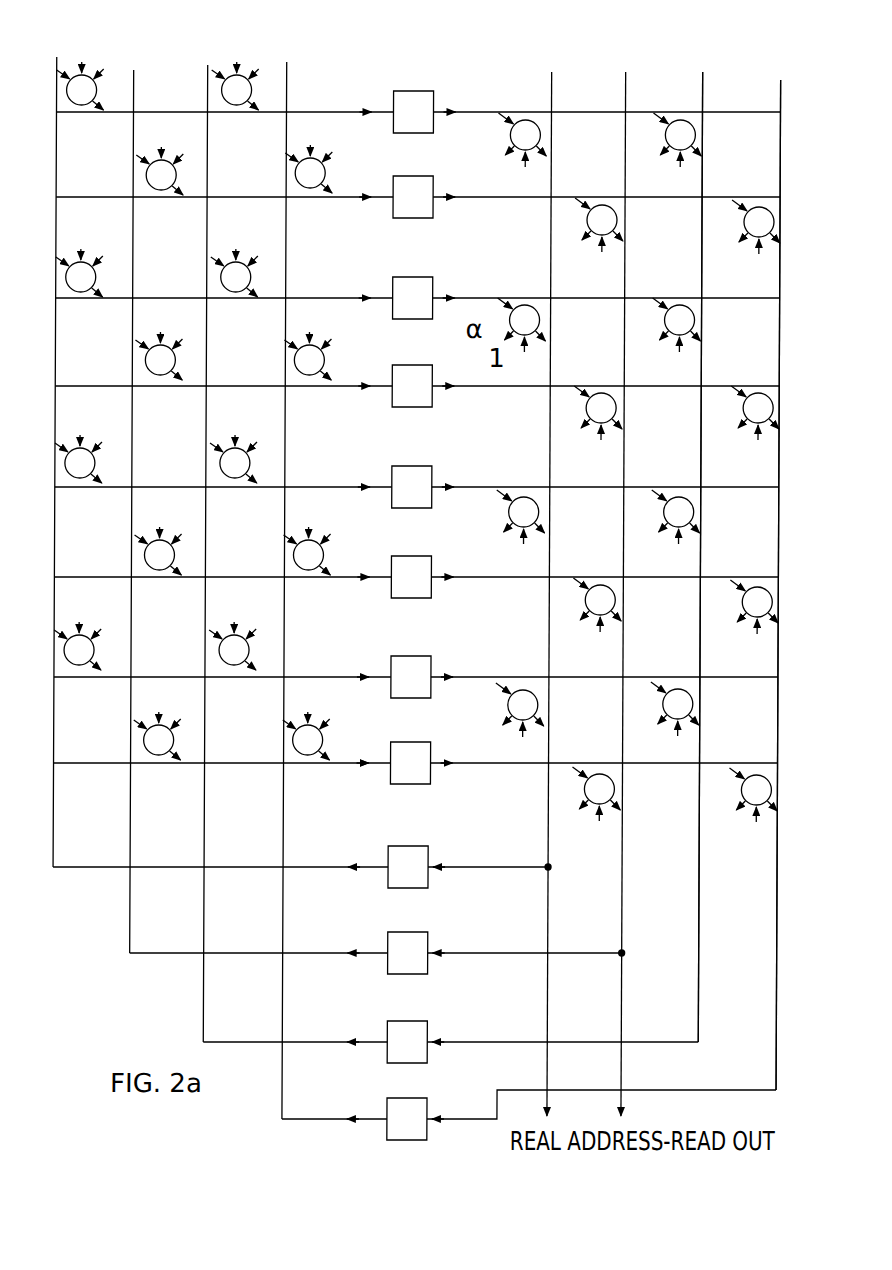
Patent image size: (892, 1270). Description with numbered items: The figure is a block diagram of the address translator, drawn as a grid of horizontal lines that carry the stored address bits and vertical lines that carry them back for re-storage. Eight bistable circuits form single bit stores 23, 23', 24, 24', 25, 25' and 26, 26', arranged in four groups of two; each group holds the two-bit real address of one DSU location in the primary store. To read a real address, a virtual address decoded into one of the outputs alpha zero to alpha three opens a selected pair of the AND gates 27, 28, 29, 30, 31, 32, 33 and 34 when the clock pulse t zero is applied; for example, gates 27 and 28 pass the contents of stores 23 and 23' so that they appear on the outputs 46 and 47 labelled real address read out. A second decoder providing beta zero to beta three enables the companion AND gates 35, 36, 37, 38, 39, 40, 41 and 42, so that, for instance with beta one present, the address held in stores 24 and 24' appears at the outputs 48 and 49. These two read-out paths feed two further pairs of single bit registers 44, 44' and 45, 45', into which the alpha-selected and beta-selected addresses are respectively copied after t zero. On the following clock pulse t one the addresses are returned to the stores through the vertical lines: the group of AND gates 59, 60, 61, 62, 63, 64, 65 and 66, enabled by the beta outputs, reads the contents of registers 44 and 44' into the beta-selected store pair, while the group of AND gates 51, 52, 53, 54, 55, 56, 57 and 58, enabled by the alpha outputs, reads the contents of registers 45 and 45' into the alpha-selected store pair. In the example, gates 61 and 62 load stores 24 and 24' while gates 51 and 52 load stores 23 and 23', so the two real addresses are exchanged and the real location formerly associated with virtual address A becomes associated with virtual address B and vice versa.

The single bit store 23 is at (419, 128).
The single bit store 23' is at (433, 217).
The single bit store 24 is at (432, 310).
The single bit store 24' is at (435, 398).
The single bit store 25 is at (434, 477).
The single bit store 25' is at (433, 591).
The single bit store 26 is at (436, 668).
The single bit store 26' is at (435, 778).
The AND gate 27 is at (541, 135).
The AND gate 28 is at (618, 220).
The AND gate 29 is at (541, 320).
The AND gate 30 is at (618, 408).
The AND gate 31 is at (541, 512).
The AND gate 32 is at (618, 600).
The AND gate 33 is at (527, 690).
The AND gate 34 is at (596, 774).
The AND gate 35 is at (696, 135).
The AND gate 36 is at (760, 207).
The AND gate 37 is at (696, 320).
The AND gate 38 is at (760, 393).
The AND gate 39 is at (696, 512).
The AND gate 40 is at (760, 587).
The AND gate 41 is at (696, 704).
The AND gate 42 is at (762, 775).
The single bit register 44 is at (436, 875).
The single bit register 44' is at (428, 942).
The single bit register 45 is at (429, 1029).
The single bit register 45' is at (431, 1109).
The output 46 is at (552, 1074).
The output 47 is at (626, 1074).
The output 48 is at (714, 950).
The output 49 is at (781, 1024).
The AND gate 51 is at (227, 101).
The AND gate 52 is at (301, 184).
The AND gate 53 is at (227, 288).
The AND gate 54 is at (301, 371).
The AND gate 55 is at (223, 474).
The AND gate 56 is at (301, 566).
The AND gate 57 is at (222, 661).
The AND gate 58 is at (301, 751).
The AND gate 59 is at (72, 101).
The AND gate 60 is at (152, 186).
The AND gate 61 is at (70, 288).
The AND gate 62 is at (151, 371).
The AND gate 63 is at (70, 474).
The AND gate 64 is at (149, 566).
The AND gate 65 is at (68, 661).
The AND gate 66 is at (148, 751).